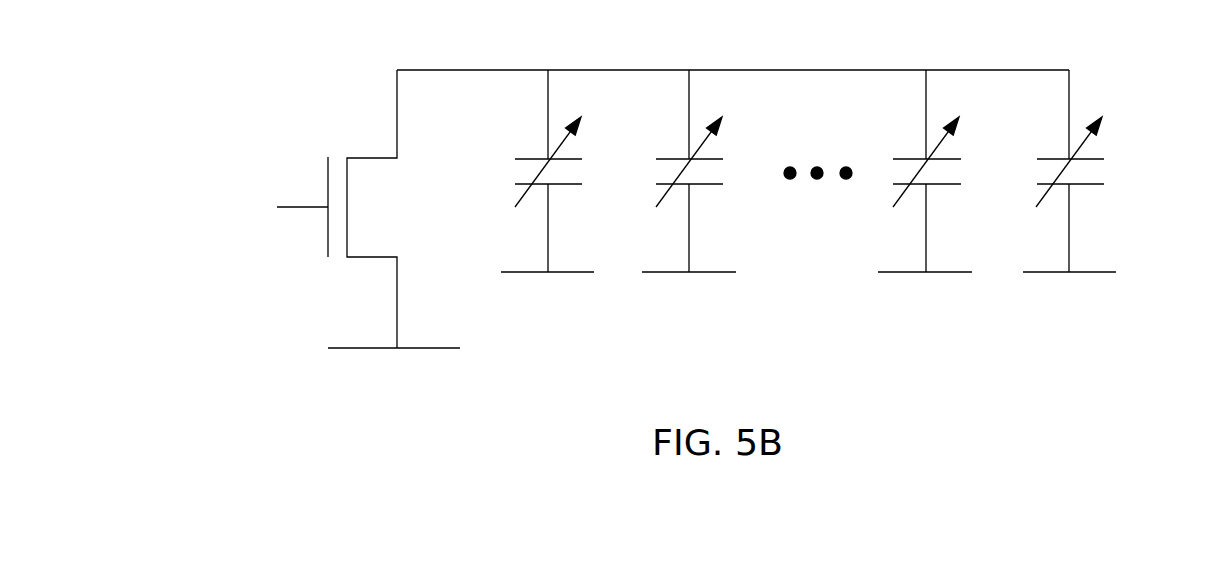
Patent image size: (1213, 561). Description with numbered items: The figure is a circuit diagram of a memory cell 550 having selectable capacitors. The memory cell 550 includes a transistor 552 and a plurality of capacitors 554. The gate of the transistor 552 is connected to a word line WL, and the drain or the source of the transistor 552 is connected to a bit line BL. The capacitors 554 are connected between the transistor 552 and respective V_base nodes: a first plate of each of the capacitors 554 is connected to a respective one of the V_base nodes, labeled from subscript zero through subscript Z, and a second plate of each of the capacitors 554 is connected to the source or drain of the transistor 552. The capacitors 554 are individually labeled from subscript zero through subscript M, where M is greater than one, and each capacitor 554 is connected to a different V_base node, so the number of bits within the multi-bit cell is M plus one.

The memory cell 550 is at (158, 72).
The transistor 552 is at (315, 157).
The capacitors 554 is at (1110, 103).